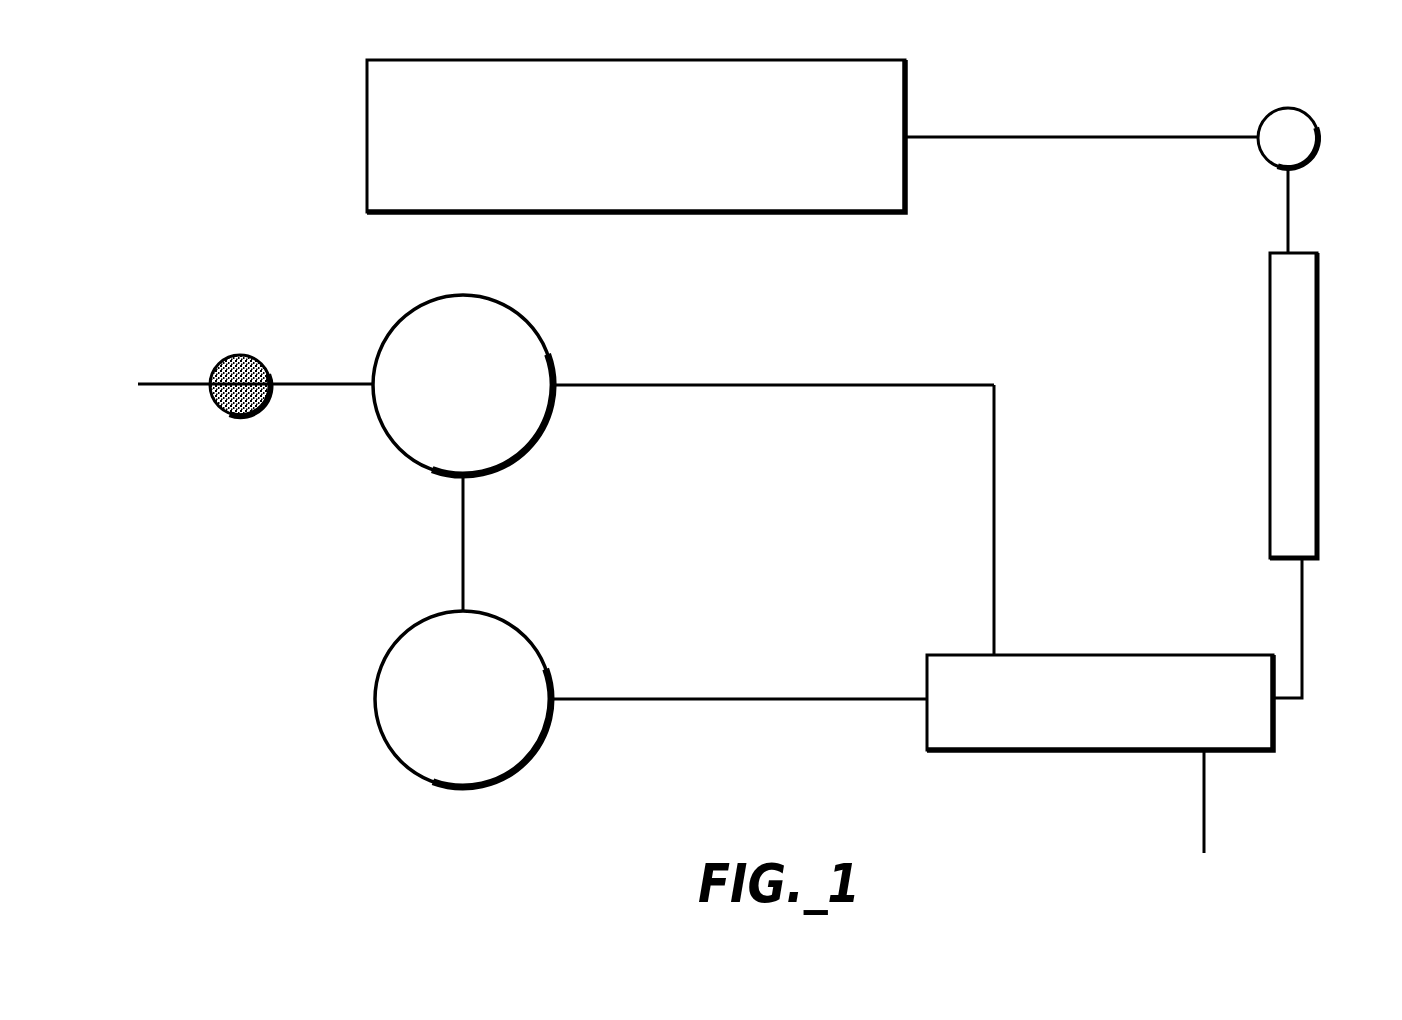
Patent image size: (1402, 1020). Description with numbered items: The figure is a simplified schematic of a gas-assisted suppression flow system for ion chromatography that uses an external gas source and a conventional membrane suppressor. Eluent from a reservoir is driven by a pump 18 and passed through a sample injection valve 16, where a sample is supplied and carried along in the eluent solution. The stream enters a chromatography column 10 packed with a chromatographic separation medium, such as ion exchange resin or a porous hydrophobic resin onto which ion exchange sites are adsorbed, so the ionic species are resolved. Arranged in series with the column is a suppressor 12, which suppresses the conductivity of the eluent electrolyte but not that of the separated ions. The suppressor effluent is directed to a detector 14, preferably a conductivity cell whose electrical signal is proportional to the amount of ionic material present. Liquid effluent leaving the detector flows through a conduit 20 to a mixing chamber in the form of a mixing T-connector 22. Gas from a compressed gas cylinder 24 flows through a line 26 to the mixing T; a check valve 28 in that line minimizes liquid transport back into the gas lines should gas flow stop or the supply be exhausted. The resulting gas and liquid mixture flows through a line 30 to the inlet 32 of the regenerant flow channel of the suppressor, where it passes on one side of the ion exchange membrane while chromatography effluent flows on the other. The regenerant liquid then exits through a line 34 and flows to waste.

The chromatography column 10 is at (1318, 406).
The suppressor 12 is at (1107, 655).
The detector 14 is at (523, 633).
The sample injection valve 16 is at (1320, 137).
The pump 18 is at (907, 108).
The conduit 20 is at (463, 523).
The mixing T-connector 22 is at (523, 318).
The compressed gas cylinder 24 is at (92, 364).
The line 26 is at (165, 385).
The check valve 28 is at (242, 355).
The line 30 is at (712, 383).
The inlet 32 is at (996, 572).
The line 34 is at (1206, 820).